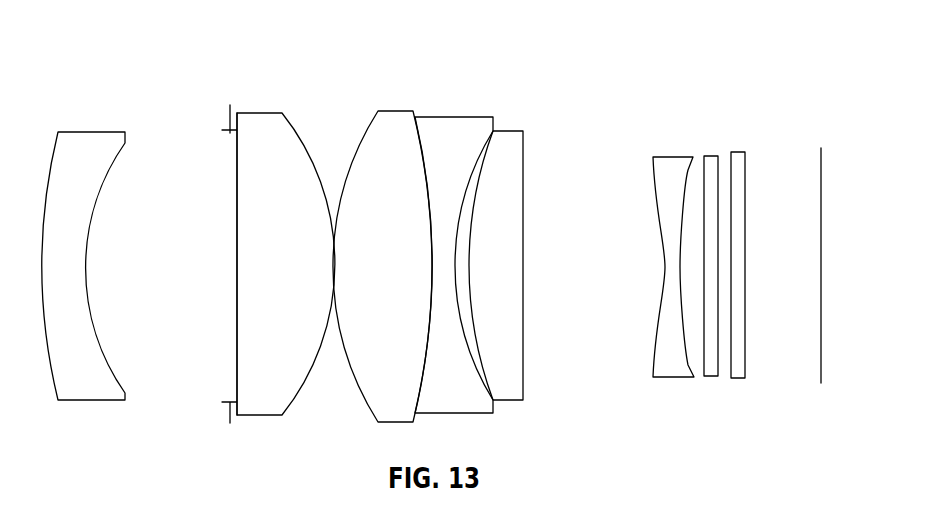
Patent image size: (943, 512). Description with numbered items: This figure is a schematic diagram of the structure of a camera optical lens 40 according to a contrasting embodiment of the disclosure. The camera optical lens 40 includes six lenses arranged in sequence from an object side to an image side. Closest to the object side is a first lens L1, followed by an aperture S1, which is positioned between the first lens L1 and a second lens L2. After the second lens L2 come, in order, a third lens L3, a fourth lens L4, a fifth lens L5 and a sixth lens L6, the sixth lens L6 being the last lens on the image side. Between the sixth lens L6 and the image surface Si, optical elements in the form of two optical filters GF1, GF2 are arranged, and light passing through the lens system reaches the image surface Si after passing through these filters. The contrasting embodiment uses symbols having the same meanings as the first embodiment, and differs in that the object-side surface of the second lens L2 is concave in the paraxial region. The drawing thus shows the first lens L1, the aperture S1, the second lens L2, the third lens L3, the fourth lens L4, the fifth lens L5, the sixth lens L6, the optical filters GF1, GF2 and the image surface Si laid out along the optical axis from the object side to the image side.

The camera optical lens 40 is at (450, 25).
The first lens L1 is at (83, 253).
The aperture S1 is at (209, 257).
The second lens L2 is at (286, 252).
The third lens L3 is at (382, 253).
The fourth lens L4 is at (454, 253).
The fifth lens L5 is at (499, 252).
The sixth lens L6 is at (673, 254).
The optical filter GF1 is at (712, 253).
The optical filter GF2 is at (754, 254).
The image surface Si is at (826, 253).